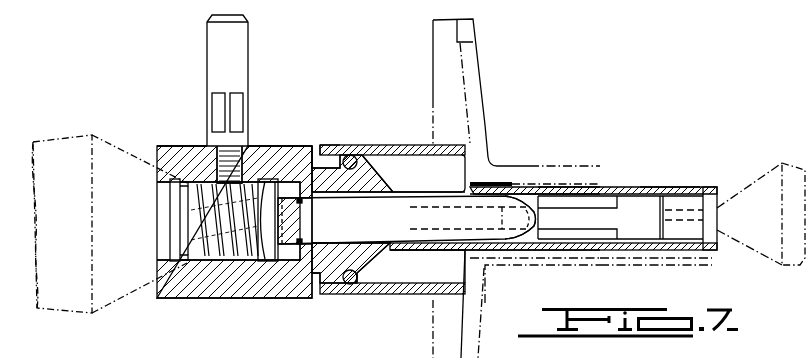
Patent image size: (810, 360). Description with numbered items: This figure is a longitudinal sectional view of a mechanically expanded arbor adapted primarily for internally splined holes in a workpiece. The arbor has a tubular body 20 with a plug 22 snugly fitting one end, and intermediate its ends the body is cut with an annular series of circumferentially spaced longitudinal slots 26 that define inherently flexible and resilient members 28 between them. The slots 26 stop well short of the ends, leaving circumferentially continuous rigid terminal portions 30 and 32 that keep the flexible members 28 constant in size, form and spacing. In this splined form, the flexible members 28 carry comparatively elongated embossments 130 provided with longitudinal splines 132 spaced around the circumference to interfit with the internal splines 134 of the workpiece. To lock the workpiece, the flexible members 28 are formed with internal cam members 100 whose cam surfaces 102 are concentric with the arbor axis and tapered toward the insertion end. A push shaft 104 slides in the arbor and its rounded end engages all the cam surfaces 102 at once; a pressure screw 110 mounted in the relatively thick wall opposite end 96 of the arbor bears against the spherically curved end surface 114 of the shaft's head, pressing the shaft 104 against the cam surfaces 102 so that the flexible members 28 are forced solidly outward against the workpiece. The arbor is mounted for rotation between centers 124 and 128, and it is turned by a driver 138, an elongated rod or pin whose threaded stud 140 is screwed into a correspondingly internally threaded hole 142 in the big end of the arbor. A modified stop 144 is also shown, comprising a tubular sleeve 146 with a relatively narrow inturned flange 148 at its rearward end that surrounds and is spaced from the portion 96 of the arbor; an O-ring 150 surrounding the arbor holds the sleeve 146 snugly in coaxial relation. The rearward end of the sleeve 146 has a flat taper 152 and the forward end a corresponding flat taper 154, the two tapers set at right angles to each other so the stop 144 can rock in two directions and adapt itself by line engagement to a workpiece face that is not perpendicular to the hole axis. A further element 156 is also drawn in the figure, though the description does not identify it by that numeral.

The tubular body 20 is at (712, 187).
The plug 22 is at (715, 197).
The longitudinal slots 26 is at (698, 157).
The flexible members 28 is at (618, 189).
The rigid terminal portion 30 is at (657, 250).
The rigid terminal portion 32 is at (397, 188).
The relatively thick wall opposite end 96 is at (363, 258).
The internal cam members 100 is at (535, 190).
The cam surfaces 102 is at (537, 229).
The push shaft 104 is at (392, 222).
The pressure screw 110 is at (223, 262).
The spherically curved end surface 114 is at (283, 262).
The center 124 is at (55, 147).
The center 128 is at (763, 173).
The elongated embossments 130 is at (567, 187).
The longitudinal splines 132 is at (508, 190).
The internal splines 134 is at (525, 268).
The driver 138 is at (237, 42).
The threaded stud 140 is at (250, 147).
The internally threaded hole 142 is at (222, 147).
The stop 144 is at (343, 133).
The tubular sleeve 146 is at (392, 146).
The inturned flange 148 is at (337, 147).
The O-ring 150 is at (356, 156).
The flat taper 152 is at (305, 297).
The flat taper 154 is at (490, 158).
The mounting plate 156 is at (473, 100).